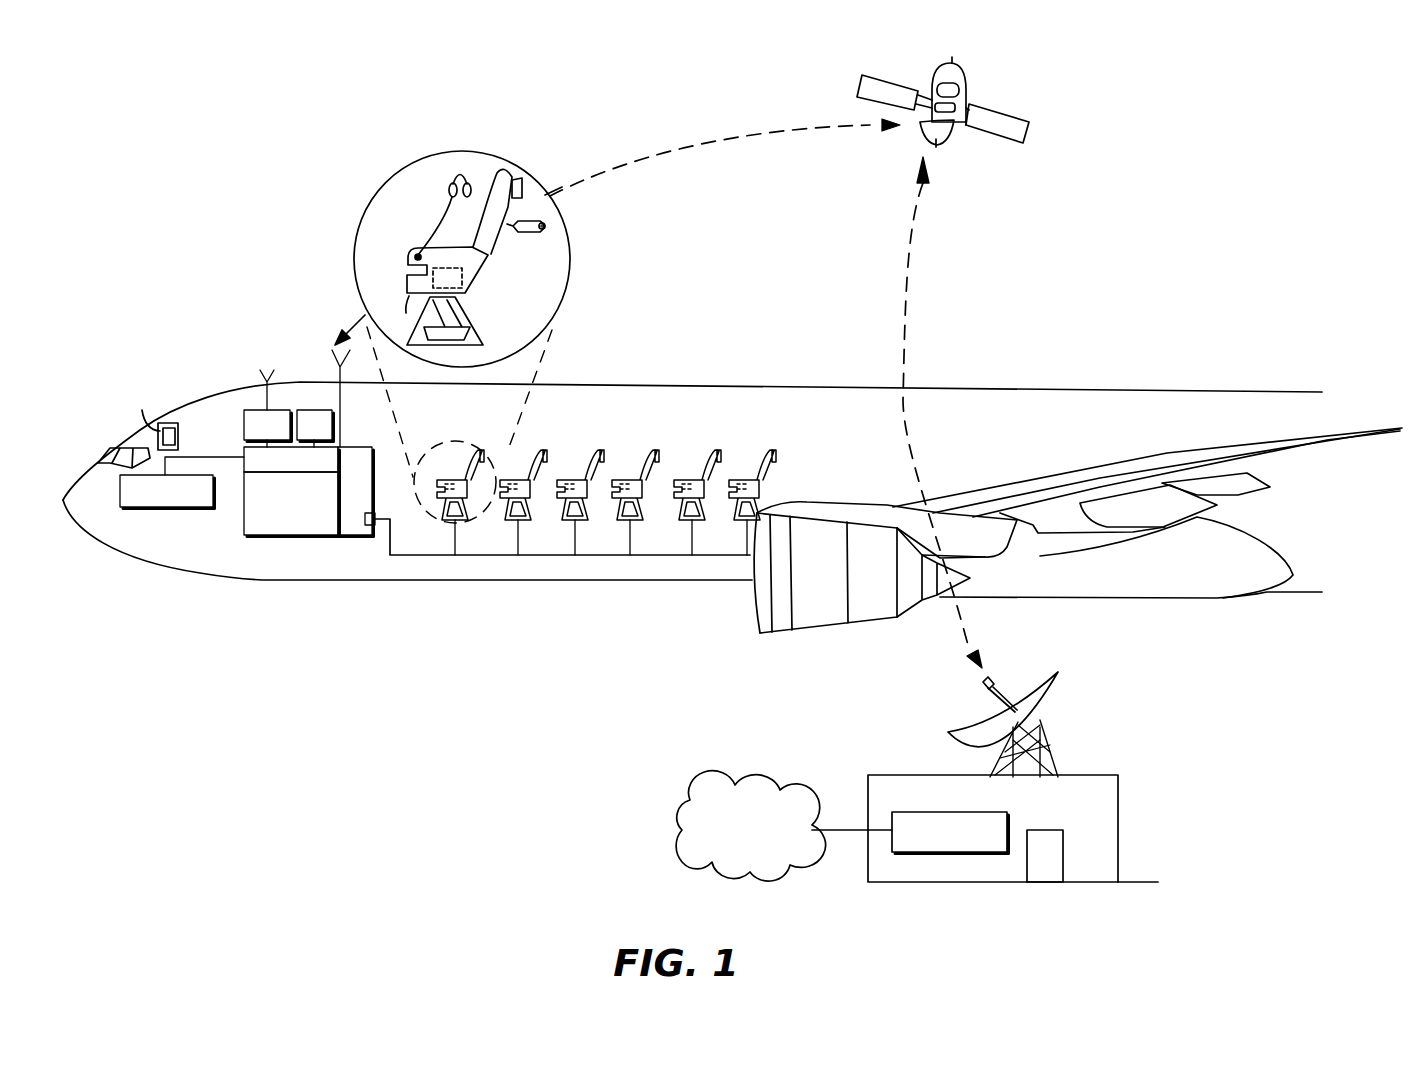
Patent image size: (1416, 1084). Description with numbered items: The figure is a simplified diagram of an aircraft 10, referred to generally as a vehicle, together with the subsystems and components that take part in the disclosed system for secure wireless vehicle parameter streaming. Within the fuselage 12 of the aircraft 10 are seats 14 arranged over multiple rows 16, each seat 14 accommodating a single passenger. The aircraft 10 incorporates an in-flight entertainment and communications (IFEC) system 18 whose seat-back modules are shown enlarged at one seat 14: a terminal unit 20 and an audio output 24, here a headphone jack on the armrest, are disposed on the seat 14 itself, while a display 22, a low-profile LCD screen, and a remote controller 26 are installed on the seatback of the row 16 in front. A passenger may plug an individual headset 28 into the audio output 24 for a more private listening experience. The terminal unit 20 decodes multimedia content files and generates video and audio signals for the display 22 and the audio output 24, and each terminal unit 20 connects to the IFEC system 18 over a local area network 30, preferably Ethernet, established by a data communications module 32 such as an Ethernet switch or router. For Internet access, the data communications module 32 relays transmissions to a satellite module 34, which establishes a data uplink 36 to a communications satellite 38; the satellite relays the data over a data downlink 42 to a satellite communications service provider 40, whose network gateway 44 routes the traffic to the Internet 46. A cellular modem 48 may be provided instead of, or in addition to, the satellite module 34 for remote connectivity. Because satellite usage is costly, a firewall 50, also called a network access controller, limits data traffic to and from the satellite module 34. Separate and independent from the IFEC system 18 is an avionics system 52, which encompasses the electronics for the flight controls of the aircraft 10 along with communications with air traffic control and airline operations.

The aircraft 10 is at (626, 678).
The fuselage 12 is at (1015, 387).
The seat 14 is at (506, 267).
The rows 16 is at (783, 440).
The in-flight entertainment and communications (IFEC) system 18 is at (278, 536).
The terminal unit 20 is at (412, 300).
The display 22 is at (522, 186).
The audio output 24 is at (418, 257).
The remote controller 26 is at (525, 233).
The headset 28 is at (449, 192).
The local area network 30 is at (423, 557).
The data communications module 32 is at (350, 447).
The satellite module 34 is at (310, 410).
The data uplink 36 is at (670, 147).
The communications satellite 38 is at (960, 127).
The satellite communications service provider 40 is at (893, 775).
The data downlink 42 is at (907, 272).
The network gateway 44 is at (937, 854).
The Internet 46 is at (732, 786).
The cellular modem 48 is at (276, 410).
The firewall 50 is at (244, 468).
The avionics system 52 is at (167, 508).